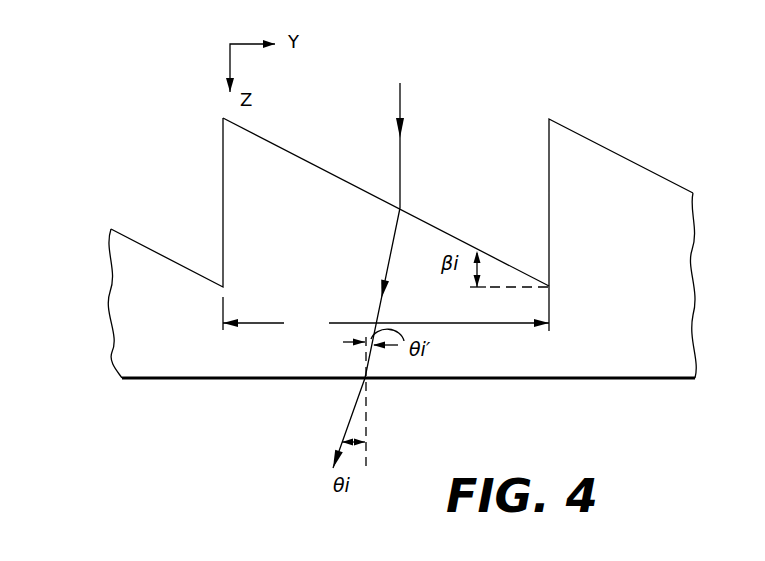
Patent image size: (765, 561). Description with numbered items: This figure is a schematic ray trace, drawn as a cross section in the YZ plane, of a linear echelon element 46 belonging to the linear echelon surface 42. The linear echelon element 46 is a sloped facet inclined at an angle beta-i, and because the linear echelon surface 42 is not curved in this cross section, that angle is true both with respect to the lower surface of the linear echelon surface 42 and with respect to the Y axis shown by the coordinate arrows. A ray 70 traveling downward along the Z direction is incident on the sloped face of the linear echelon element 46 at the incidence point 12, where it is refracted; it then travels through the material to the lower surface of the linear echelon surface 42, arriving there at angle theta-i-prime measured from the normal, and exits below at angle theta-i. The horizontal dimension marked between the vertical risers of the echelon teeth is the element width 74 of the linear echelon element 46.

The linear echelon surface 42 is at (132, 353).
The linear echelon element 46 is at (308, 160).
The ray 70 is at (402, 97).
The point of incidence 12 is at (403, 208).
The element width 74 is at (386, 310).